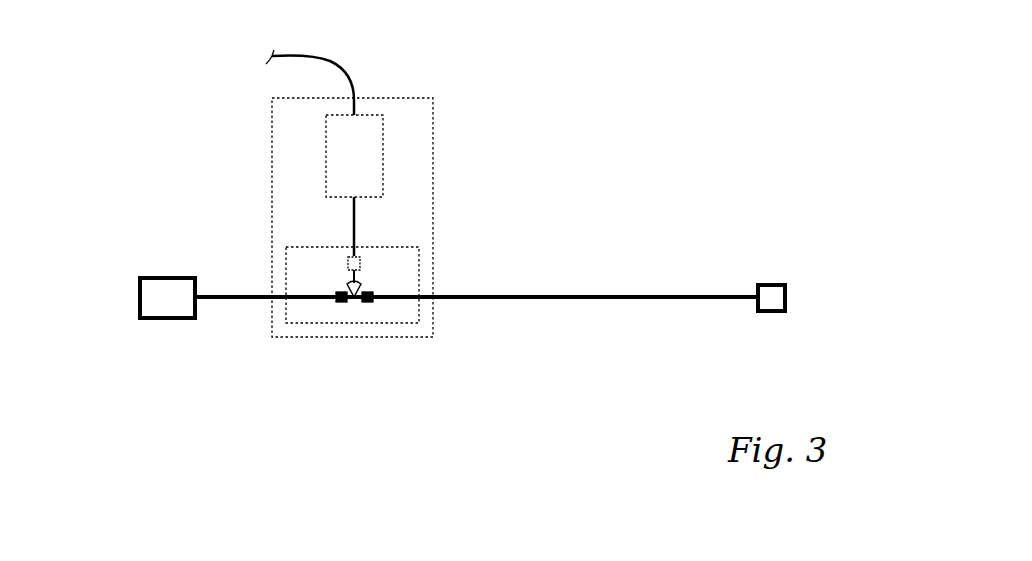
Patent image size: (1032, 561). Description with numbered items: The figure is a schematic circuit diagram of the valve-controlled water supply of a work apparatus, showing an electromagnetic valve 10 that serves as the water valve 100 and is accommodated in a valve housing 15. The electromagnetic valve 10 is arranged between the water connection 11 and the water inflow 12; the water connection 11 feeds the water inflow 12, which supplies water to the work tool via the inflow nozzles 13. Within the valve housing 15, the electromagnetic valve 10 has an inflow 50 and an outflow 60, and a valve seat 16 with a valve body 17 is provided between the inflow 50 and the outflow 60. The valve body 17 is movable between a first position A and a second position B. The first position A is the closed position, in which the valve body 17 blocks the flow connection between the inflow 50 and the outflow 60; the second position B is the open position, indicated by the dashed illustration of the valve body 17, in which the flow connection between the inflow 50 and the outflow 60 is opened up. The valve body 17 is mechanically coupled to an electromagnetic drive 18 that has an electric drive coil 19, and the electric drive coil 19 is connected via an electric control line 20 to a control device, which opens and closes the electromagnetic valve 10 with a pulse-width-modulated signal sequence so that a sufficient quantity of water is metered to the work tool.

The water valve 100 is at (383, 174).
The electromagnetic valve 10 is at (354, 308).
The water connection 11 is at (145, 272).
The water inflow 12 is at (592, 300).
The inflow nozzles 13 is at (772, 293).
The valve housing 15 is at (272, 175).
The valve seat 16 is at (364, 300).
The valve body 17 is at (346, 283).
The electromagnetic drive 18 is at (383, 180).
The electric drive coil 19 is at (346, 163).
The electric control line 20 is at (337, 62).
The inflow 50 is at (272, 300).
The outflow 60 is at (435, 300).
The first position A is at (372, 282).
The second position B is at (380, 255).